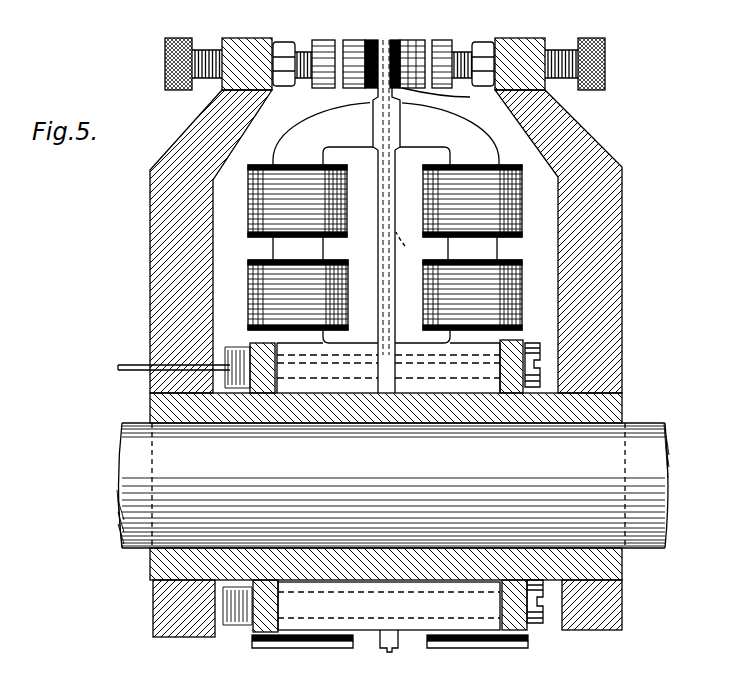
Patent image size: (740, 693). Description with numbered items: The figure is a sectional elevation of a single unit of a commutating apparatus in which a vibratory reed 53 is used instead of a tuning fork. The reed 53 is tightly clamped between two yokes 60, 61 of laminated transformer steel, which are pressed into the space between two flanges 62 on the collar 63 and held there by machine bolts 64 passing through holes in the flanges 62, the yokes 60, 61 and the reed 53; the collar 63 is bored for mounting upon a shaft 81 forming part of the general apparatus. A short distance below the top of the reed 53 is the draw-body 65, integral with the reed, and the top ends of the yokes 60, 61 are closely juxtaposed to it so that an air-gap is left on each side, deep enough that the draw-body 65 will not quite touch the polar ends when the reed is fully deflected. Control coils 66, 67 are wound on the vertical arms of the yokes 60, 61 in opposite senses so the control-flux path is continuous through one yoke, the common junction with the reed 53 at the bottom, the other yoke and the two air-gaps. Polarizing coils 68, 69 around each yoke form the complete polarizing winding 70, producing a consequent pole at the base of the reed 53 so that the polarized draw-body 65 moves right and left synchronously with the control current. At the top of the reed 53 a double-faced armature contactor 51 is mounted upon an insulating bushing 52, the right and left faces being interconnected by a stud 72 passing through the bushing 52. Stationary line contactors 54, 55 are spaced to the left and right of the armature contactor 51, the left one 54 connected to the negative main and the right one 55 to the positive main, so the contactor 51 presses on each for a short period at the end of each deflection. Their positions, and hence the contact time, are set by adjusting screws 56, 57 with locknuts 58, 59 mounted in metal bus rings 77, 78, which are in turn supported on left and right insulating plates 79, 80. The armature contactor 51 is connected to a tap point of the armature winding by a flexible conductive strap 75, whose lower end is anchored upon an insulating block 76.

The armature contactor 51 is at (359, 32).
The insulating bushing 52 is at (395, 40).
The vibratory reed 53 is at (378, 243).
The negative line contactor 54 is at (323, 41).
The positive line contactor 55 is at (443, 41).
The adjusting screw 56 is at (196, 50).
The adjusting screw 57 is at (563, 49).
The locknut 58 is at (285, 43).
The locknut 59 is at (483, 41).
The yoke 60 is at (360, 148).
The yoke 61 is at (497, 250).
The flange 62 is at (255, 343).
The collar 63 is at (150, 407).
The machine bolt 64 is at (538, 358).
The draw-body 65 is at (372, 122).
The control coil 66 is at (248, 205).
The control coil 67 is at (522, 210).
The polarizing coil 68 is at (248, 289).
The polarizing coil 69 is at (522, 293).
The polarizing winding 70 is at (418, 302).
The stud 72 is at (372, 106).
The flexible conductive strap 75 is at (133, 365).
The insulating block 76 is at (312, 362).
The metal ring 77 is at (258, 44).
The metal ring 78 is at (520, 42).
The insulating plate 79 is at (150, 208).
The insulating plate 80 is at (622, 203).
The shaft 81 is at (650, 421).